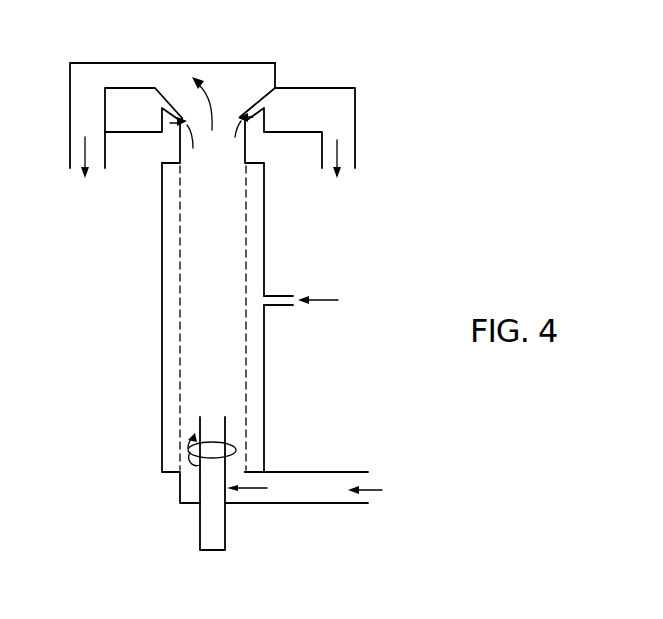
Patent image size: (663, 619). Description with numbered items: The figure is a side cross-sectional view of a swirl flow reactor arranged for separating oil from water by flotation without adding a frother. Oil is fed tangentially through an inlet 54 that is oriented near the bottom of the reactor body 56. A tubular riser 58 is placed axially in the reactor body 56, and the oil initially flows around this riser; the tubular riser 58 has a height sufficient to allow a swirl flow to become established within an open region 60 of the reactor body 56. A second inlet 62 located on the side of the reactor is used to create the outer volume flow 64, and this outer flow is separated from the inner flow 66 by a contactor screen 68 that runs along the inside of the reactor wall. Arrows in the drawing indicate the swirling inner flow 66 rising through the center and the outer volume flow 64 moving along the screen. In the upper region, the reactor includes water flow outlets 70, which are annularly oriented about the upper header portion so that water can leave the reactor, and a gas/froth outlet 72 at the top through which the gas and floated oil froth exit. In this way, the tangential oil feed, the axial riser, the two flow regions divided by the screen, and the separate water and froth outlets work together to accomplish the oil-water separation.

The inlet 54 is at (348, 472).
The reactor body 56 is at (200, 417).
The tubular riser 58 is at (162, 317).
The open region 60 is at (207, 258).
The second inlet 62 is at (277, 295).
The outer volume flow 64 is at (257, 198).
The inner flow 66 is at (188, 214).
The contactor screen 68 is at (245, 370).
The water flow outlets 70 is at (285, 102).
The gas/froth outlet 72 is at (150, 77).